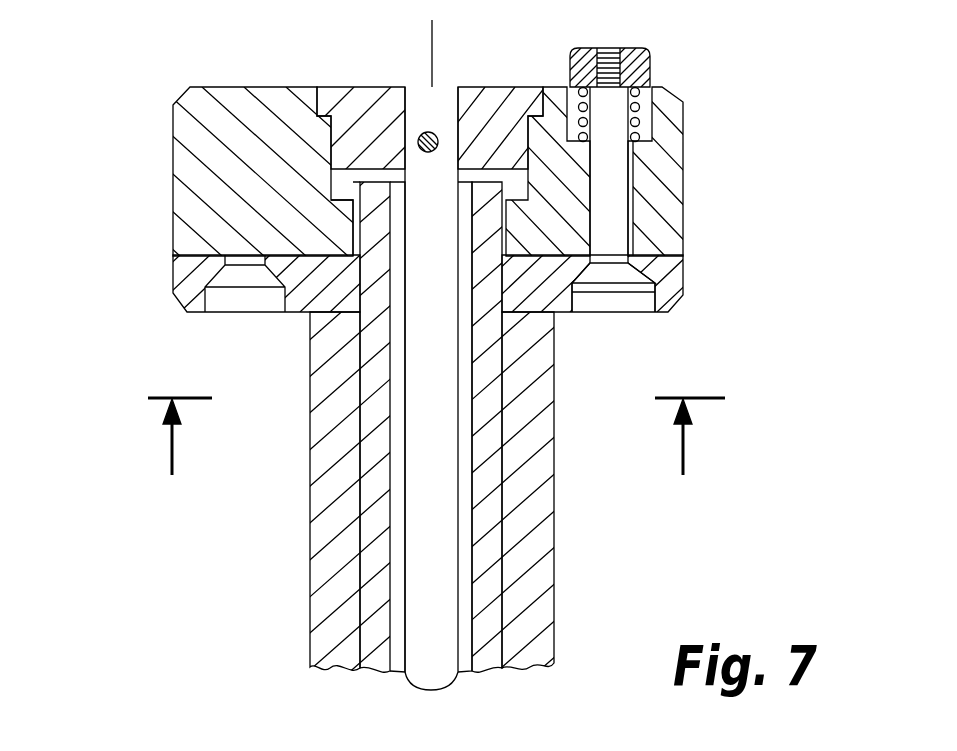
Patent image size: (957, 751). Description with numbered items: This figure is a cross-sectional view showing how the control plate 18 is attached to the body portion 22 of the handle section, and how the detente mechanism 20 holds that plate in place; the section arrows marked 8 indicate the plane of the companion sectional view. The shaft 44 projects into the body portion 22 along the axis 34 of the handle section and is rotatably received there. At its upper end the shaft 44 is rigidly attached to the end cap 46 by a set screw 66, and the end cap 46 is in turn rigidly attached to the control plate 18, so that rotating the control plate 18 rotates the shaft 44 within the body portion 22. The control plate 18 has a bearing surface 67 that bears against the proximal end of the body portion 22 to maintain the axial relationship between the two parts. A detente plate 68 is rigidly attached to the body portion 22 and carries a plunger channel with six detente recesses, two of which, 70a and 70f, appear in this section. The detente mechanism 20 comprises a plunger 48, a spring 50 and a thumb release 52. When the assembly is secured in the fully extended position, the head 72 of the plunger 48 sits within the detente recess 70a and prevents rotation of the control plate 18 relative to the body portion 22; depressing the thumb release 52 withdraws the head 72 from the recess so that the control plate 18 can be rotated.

The control plate 18 is at (188, 100).
The detente mechanism 20 is at (707, 167).
The body portion 22 is at (555, 465).
The axis 34 is at (433, 45).
The shaft 44 is at (440, 648).
The cap 46 is at (488, 108).
The plunger 48 is at (610, 209).
The spring 50 is at (650, 103).
The thumb release 52 is at (648, 54).
The set screw 66 is at (421, 134).
The bearing surface 67 is at (353, 224).
The detente plate 68 is at (190, 281).
The detente recess 70f is at (243, 298).
The detente recess 70a is at (590, 300).
The head 72 is at (625, 275).
The section line 8- 8 is at (436, 436).